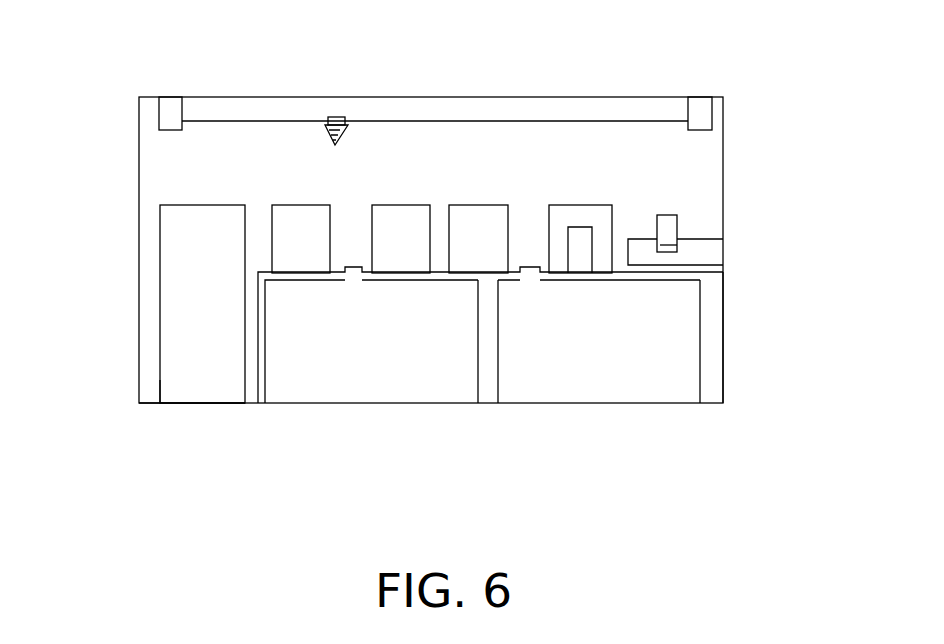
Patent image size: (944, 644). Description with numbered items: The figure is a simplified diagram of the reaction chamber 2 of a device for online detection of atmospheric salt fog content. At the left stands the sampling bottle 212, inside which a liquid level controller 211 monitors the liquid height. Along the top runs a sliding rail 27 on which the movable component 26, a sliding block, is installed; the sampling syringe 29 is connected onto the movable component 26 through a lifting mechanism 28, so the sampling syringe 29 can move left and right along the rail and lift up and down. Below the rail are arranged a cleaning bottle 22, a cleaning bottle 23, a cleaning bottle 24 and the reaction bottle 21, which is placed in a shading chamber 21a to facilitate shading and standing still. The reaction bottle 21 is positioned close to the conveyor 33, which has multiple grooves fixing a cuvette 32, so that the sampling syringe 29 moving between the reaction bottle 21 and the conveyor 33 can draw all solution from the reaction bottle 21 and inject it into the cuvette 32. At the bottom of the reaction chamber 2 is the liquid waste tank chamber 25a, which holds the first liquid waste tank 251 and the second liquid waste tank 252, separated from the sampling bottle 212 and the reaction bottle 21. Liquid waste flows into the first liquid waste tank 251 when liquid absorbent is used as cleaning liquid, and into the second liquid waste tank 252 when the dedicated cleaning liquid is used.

The reaction chamber 2 is at (139, 167).
The reaction bottle 21 is at (593, 227).
The shading chamber 21a is at (560, 205).
The cleaning bottle 22 is at (300, 205).
The cleaning bottle 23 is at (404, 205).
The cleaning bottle 24 is at (479, 205).
The liquid waste tank chamber 25a is at (723, 333).
The first liquid waste tank 251 is at (702, 383).
The second liquid waste tank 252 is at (478, 382).
The movable component 26 is at (337, 117).
The sliding rail 27 is at (227, 120).
The lifting mechanism 28 is at (346, 121).
The sampling syringe 29 is at (335, 147).
The cuvette 32 is at (677, 223).
The conveyor 33 is at (692, 239).
The liquid level controller 211 is at (160, 380).
The sampling bottle 212 is at (160, 300).